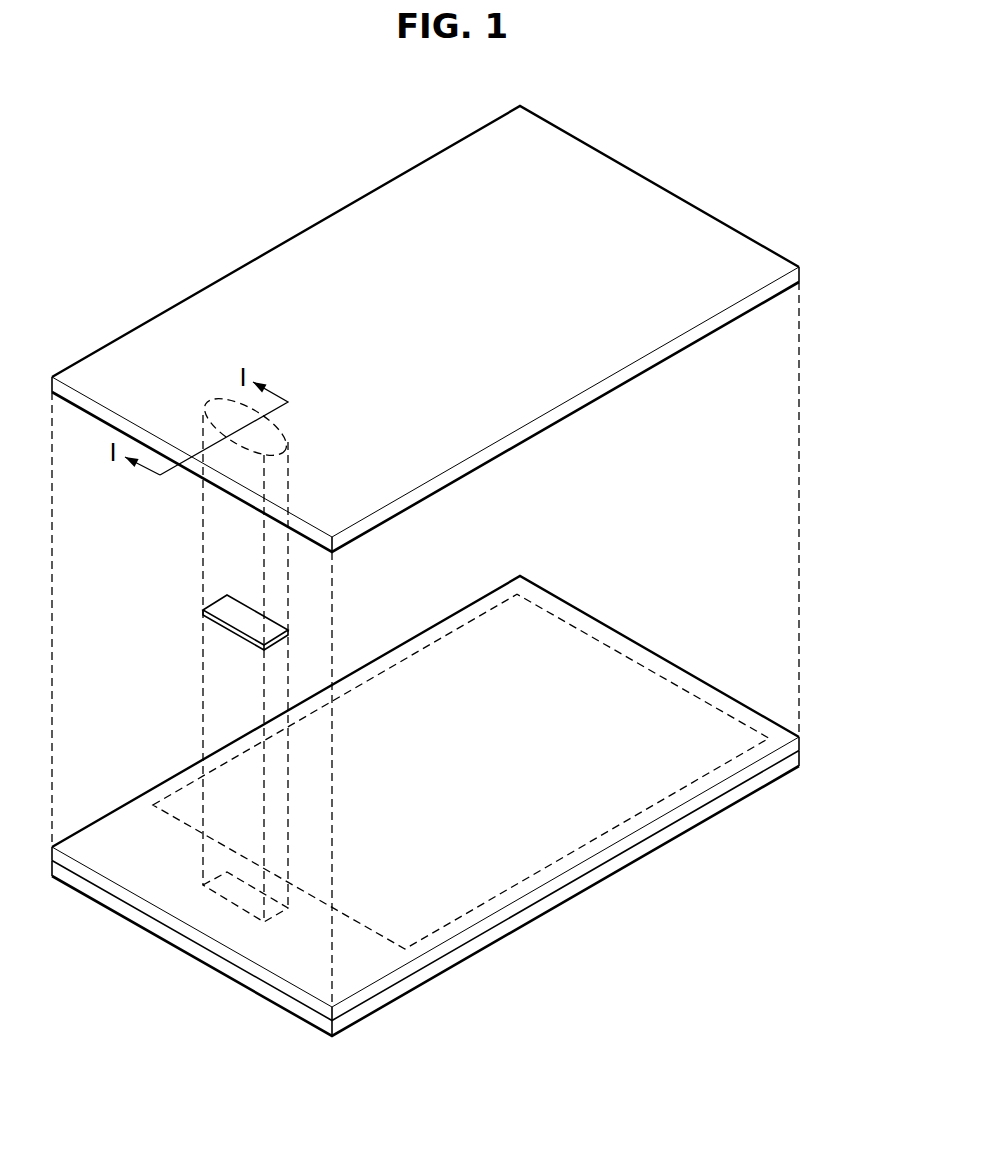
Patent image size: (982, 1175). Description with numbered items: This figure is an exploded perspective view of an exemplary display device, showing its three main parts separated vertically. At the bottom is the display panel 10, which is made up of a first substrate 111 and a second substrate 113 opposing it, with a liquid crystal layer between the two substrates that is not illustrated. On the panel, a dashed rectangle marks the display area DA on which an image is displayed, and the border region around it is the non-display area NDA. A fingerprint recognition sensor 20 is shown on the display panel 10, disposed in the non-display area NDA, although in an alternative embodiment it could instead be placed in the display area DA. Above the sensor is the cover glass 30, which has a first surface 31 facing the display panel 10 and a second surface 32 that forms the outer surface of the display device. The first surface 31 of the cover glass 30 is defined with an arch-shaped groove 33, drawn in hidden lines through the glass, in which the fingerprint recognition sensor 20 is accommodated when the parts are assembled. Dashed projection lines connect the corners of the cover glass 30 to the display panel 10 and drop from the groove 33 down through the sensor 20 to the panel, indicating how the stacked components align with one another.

The display panel 10 is at (466, 806).
The first substrate 111 is at (800, 760).
The second substrate 113 is at (800, 746).
The fingerprint recognition sensor 20 is at (221, 605).
The cover glass 30 is at (425, 514).
The first surface 31 is at (703, 343).
The second surface 32 is at (645, 197).
The arch-shaped groove 33 is at (218, 398).
The display area DA is at (577, 813).
The non-display area NDA is at (570, 860).